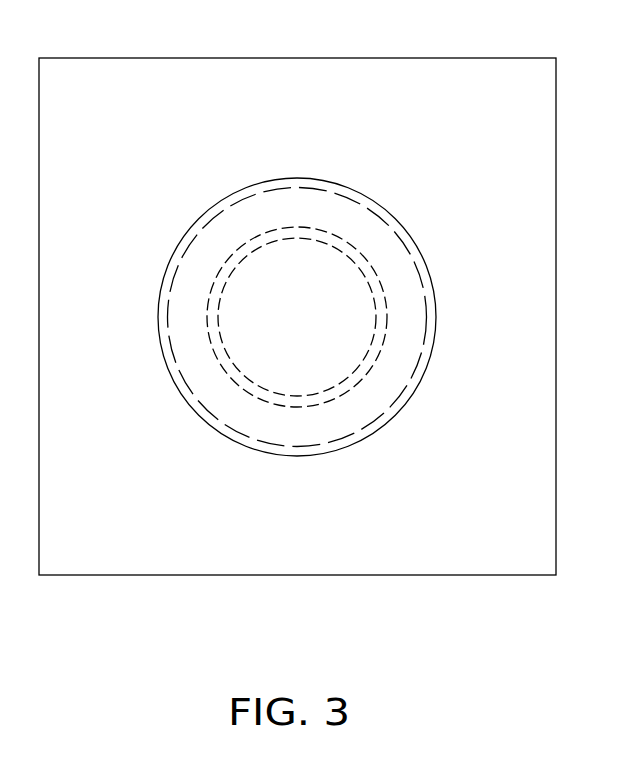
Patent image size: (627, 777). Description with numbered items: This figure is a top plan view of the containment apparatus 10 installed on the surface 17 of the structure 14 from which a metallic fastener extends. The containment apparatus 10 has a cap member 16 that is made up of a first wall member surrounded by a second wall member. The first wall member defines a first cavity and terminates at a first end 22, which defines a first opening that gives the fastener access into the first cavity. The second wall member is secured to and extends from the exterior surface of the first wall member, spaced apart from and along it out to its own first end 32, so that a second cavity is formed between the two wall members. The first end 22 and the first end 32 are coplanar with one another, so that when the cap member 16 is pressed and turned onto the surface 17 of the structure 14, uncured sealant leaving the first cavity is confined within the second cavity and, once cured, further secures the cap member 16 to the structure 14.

The containment apparatus 10 is at (329, 296).
The structure 14 is at (325, 294).
The cap member 16 is at (363, 417).
The surface 17 is at (503, 230).
The first end 22 is at (252, 237).
The first end 32 is at (435, 310).